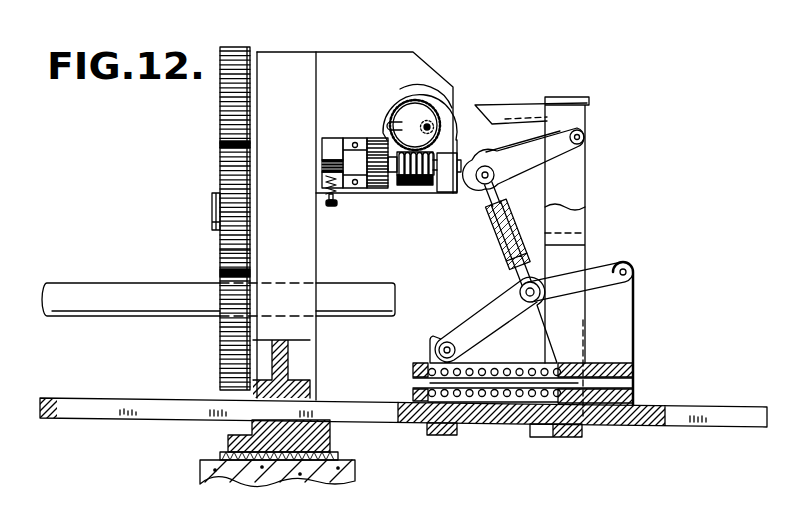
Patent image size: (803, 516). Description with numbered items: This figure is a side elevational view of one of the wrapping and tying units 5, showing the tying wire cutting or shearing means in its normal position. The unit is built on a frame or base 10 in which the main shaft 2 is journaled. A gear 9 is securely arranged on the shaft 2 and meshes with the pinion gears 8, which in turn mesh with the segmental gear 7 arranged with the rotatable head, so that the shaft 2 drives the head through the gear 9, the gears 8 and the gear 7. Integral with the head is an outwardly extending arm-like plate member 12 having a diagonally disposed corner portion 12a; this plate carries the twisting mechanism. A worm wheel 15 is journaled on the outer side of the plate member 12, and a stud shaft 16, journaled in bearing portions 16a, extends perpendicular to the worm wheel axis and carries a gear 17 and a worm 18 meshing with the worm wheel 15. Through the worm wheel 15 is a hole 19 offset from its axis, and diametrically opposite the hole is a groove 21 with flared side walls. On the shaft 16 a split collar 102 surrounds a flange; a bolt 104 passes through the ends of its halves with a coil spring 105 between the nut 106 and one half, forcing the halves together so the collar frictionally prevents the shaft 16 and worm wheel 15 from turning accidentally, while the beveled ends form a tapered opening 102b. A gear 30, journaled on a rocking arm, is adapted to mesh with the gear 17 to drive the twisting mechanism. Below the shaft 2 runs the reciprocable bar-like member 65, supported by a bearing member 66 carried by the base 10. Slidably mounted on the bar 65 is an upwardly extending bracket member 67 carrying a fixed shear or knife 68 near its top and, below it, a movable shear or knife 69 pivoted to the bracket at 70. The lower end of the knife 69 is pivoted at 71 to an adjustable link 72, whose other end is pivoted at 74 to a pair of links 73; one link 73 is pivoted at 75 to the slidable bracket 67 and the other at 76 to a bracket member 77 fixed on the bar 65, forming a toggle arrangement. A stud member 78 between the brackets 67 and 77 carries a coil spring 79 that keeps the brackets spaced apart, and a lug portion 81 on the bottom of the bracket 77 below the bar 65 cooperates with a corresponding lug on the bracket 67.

The shaft 2 is at (126, 290).
The wrapping and tying unit 5 is at (438, 58).
The gear 7 is at (236, 60).
The pinion gear 8 is at (228, 178).
The gear 9 is at (227, 363).
The base 10 is at (283, 72).
The plate member 12 is at (367, 68).
The diagonally disposed corner portion 12a is at (415, 122).
The worm wheel 15 is at (440, 93).
The stud shaft 16 is at (460, 157).
The bearing portion 16a is at (444, 190).
The gear 17 is at (382, 189).
The worm 18 is at (417, 186).
The hole 19 is at (427, 127).
The groove 21 is at (388, 126).
The gear 30 is at (442, 437).
The bar-like member 65 is at (88, 403).
The bearing member 66 is at (292, 420).
The bracket member 67 is at (576, 220).
The shear or knife member 68 is at (518, 113).
The movable shear or knife member 69 is at (533, 147).
The pivot 70 is at (583, 137).
The pivot 71 is at (494, 175).
The adjustable link 72 is at (507, 233).
The link 73 is at (498, 319).
The pivot 74 is at (520, 290).
The pivot 75 is at (441, 350).
The pivot 76 is at (630, 265).
The bracket member 77 is at (622, 338).
The stud member 78 is at (512, 380).
The coil spring 79 is at (533, 403).
The lug portion 81 is at (543, 432).
The split collar 102 is at (333, 147).
The tapered opening 102b is at (322, 166).
The bolt 104 is at (334, 204).
The coil spring 105 is at (323, 184).
The nut 106 is at (327, 202).